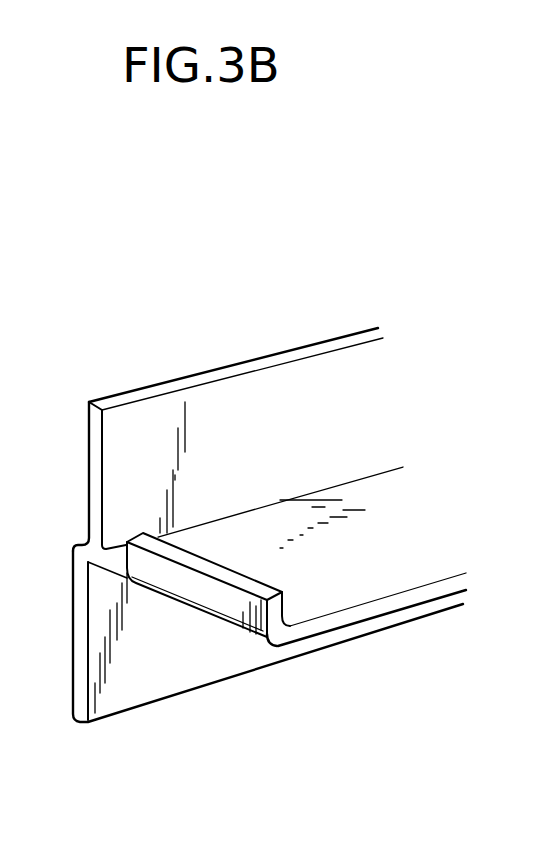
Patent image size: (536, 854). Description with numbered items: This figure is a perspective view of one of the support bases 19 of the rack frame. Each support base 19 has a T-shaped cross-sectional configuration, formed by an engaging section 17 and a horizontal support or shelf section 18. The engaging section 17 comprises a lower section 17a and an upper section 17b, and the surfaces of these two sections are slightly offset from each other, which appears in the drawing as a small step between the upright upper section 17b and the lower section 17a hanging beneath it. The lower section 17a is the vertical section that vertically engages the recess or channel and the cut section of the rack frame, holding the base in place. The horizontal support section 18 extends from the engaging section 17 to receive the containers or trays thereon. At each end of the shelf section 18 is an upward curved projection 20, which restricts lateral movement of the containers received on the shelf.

The engaging section 17 is at (292, 352).
The lower section 17a is at (157, 658).
The upper section 17b is at (204, 410).
The horizontal support section 18 is at (395, 563).
The support base 19 is at (358, 327).
The upward curved projection 20 is at (278, 607).